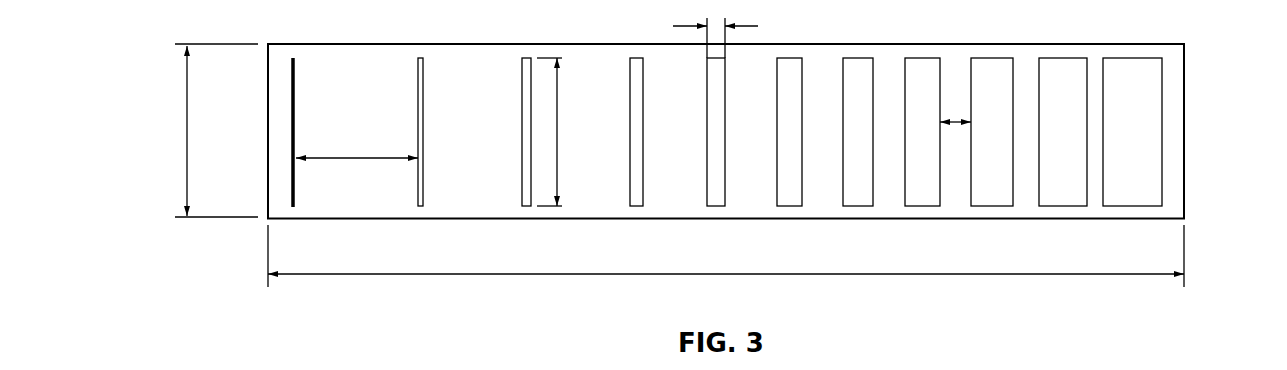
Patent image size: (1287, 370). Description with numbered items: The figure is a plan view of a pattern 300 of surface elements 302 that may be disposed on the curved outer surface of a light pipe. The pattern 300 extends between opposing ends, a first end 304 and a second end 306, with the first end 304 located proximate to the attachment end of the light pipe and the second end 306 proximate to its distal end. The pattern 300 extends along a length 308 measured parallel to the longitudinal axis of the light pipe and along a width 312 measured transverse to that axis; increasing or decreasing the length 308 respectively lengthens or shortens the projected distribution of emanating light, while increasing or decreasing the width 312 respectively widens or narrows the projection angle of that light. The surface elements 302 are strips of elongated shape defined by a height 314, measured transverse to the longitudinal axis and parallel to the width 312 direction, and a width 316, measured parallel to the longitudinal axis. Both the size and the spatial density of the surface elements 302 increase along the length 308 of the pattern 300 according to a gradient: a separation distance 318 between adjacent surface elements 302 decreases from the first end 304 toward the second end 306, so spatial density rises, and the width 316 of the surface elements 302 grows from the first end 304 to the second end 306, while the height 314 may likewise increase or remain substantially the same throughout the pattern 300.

The pattern 300 is at (833, 44).
The surface elements 302 is at (987, 67).
The first end 304 is at (268, 79).
The second end 306 is at (1184, 110).
The length 308 is at (743, 275).
The width 312 is at (187, 115).
The height 314 is at (560, 143).
The width 316 is at (698, 25).
The separation distance 318 is at (330, 157).